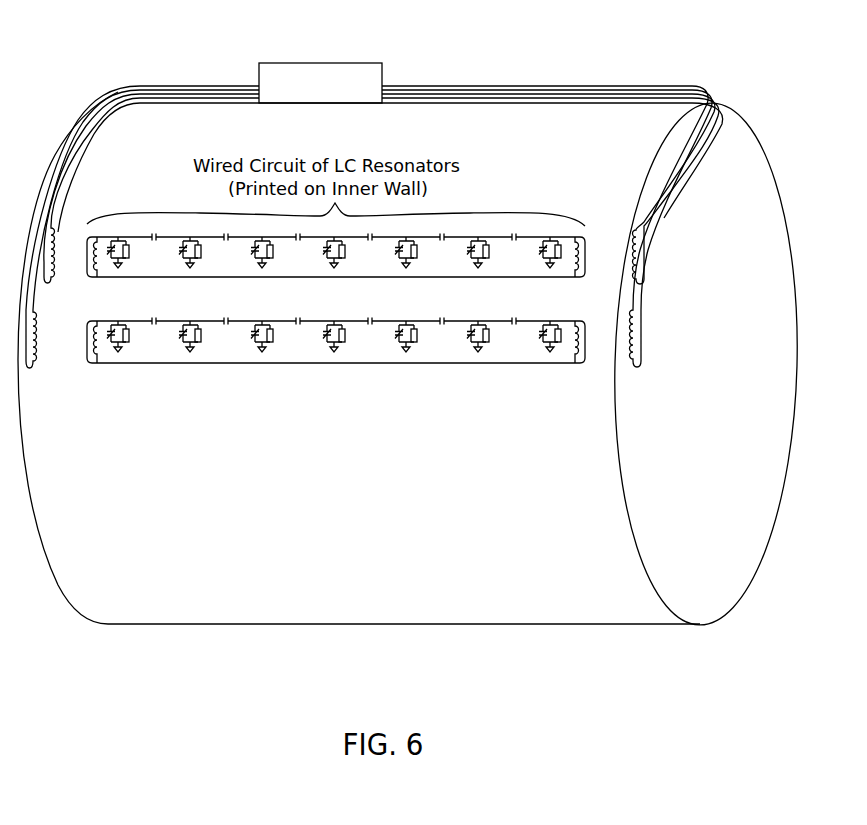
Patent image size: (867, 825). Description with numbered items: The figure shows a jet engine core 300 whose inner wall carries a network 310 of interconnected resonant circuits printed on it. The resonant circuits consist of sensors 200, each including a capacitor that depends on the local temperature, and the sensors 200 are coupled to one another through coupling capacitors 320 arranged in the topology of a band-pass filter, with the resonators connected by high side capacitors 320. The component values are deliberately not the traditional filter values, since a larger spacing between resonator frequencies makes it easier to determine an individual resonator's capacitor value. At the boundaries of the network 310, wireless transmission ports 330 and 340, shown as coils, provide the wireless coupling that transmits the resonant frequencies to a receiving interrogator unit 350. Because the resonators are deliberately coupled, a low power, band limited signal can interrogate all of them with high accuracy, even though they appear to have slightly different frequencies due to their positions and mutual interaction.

The jet engine core 300 is at (737, 114).
The receiving interrogator unit 350 is at (318, 62).
The network of interconnected resonant circuits 310 is at (336, 381).
The coupling capacitor 320 is at (228, 230).
The wireless transmission port 330 is at (595, 240).
The wireless transmission port 340 is at (76, 240).
The sensor 200 is at (395, 350).